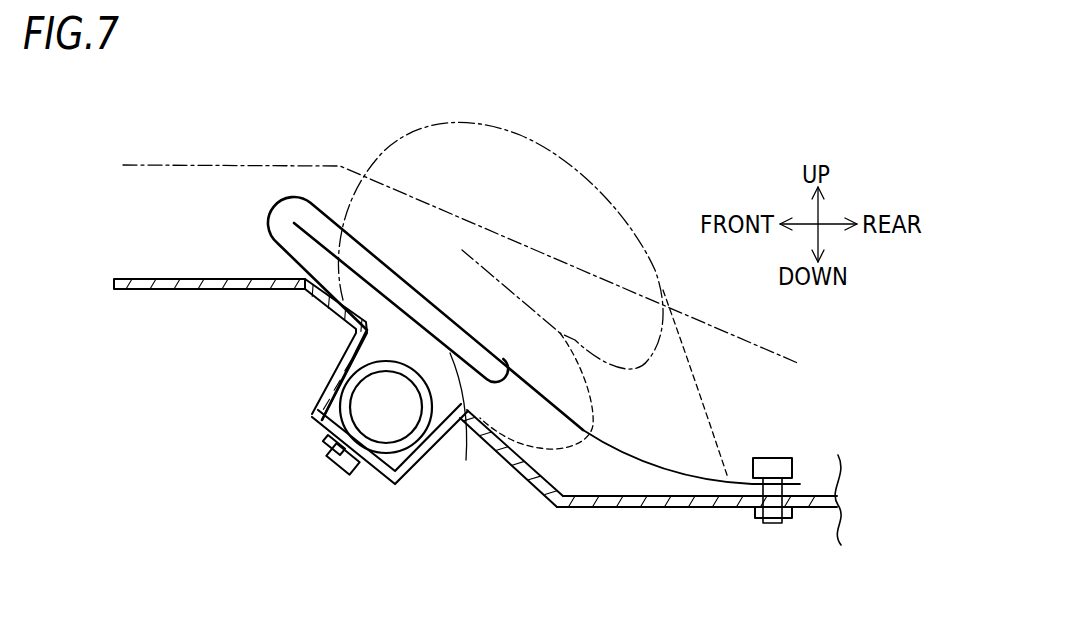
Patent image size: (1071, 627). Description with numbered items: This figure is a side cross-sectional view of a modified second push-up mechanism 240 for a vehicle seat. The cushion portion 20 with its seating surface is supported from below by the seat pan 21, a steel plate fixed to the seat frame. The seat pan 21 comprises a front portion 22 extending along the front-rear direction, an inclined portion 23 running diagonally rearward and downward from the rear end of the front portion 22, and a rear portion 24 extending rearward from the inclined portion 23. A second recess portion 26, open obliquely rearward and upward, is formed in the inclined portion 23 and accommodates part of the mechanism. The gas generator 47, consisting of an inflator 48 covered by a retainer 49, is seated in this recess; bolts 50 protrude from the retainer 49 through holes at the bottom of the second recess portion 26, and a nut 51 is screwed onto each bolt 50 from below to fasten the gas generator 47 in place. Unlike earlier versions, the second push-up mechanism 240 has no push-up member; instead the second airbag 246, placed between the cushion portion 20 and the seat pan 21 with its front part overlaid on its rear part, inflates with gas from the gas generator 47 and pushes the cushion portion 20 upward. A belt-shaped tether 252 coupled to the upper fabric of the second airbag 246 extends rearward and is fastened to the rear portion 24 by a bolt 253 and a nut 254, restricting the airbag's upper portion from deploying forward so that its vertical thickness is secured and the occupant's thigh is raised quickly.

The cushion portion 20 is at (122, 165).
The seat pan 21 is at (237, 313).
The front portion 22 is at (170, 292).
The inclined portion 23 is at (330, 312).
The rear portion 24 is at (640, 508).
The second recess portion 26 is at (393, 436).
The gas generator 47 is at (437, 492).
The inflator 48 is at (432, 452).
The retainer 49 is at (465, 432).
The bolt 50 is at (330, 476).
The nut 51 is at (328, 440).
The second push-up mechanism 240 is at (401, 243).
The second airbag 246 is at (322, 203).
The tether 252 is at (636, 462).
The bolt 253 is at (772, 457).
The nut 254 is at (756, 518).